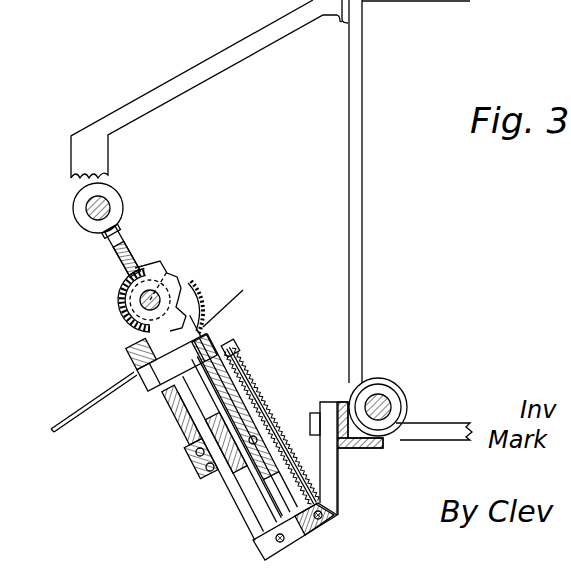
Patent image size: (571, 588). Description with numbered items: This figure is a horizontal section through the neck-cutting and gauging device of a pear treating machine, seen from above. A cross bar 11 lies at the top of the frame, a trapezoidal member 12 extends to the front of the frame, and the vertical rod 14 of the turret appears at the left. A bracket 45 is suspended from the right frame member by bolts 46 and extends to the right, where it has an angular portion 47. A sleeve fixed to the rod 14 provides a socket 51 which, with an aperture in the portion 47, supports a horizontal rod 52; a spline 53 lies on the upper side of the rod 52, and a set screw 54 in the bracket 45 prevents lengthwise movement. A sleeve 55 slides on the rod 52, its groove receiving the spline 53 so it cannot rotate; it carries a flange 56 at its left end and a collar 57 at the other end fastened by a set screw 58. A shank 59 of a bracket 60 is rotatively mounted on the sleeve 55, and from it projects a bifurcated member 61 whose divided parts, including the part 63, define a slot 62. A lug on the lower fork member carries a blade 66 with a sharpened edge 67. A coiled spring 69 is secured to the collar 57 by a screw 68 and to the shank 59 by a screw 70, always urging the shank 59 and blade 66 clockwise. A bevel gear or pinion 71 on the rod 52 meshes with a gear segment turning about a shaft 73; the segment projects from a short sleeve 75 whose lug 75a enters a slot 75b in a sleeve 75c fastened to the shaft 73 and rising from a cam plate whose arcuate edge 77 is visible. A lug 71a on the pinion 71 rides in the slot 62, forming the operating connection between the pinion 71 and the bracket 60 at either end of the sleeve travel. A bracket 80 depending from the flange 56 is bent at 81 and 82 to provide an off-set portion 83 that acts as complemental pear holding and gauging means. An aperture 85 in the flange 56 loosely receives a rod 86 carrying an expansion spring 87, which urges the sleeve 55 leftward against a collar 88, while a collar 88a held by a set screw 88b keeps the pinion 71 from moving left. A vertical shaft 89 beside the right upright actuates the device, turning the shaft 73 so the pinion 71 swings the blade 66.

The cross bar 11 is at (357, 378).
The trapezoidal member 12 is at (108, 160).
The rod 14 is at (106, 203).
The bracket 45 is at (337, 487).
The bolts 46 is at (315, 408).
The angular portion 47 is at (298, 538).
The socket 51 is at (127, 232).
The rod 52 is at (132, 248).
The spline 53 is at (270, 518).
The set screw 54 is at (283, 540).
The sleeve 55 is at (192, 432).
The flange 56 is at (175, 420).
The collar 57 is at (217, 473).
The set screw 58 is at (263, 417).
The shank 59 is at (193, 447).
The bracket 60 is at (167, 393).
The bifurcated member 61 is at (175, 375).
The slot 62 is at (120, 333).
The divided part 63 is at (127, 345).
The blade 66 is at (103, 400).
The sharpened edge 67 is at (54, 418).
The screw 68 is at (203, 467).
The coiled spring 69 is at (207, 460).
The screw 70 is at (198, 455).
The bevel gear 71 is at (230, 303).
The lug 71a is at (127, 407).
The shaft 73 is at (117, 302).
The short sleeve 75 is at (120, 288).
The lug 75a is at (165, 270).
The slot 75b is at (183, 288).
The sleeve 75c is at (123, 280).
The arcuate edge 77 is at (212, 287).
The bracket 80 is at (243, 348).
The bend 81 is at (230, 343).
The bend 82 is at (250, 303).
The off-set portion 83 is at (133, 373).
The aperture 85 is at (240, 352).
The rod 86 is at (250, 378).
The expansion spring 87 is at (265, 392).
The collar 88 is at (222, 332).
The collar 88a is at (128, 367).
The set screw 88b is at (123, 315).
The vertical shaft 89 is at (392, 402).